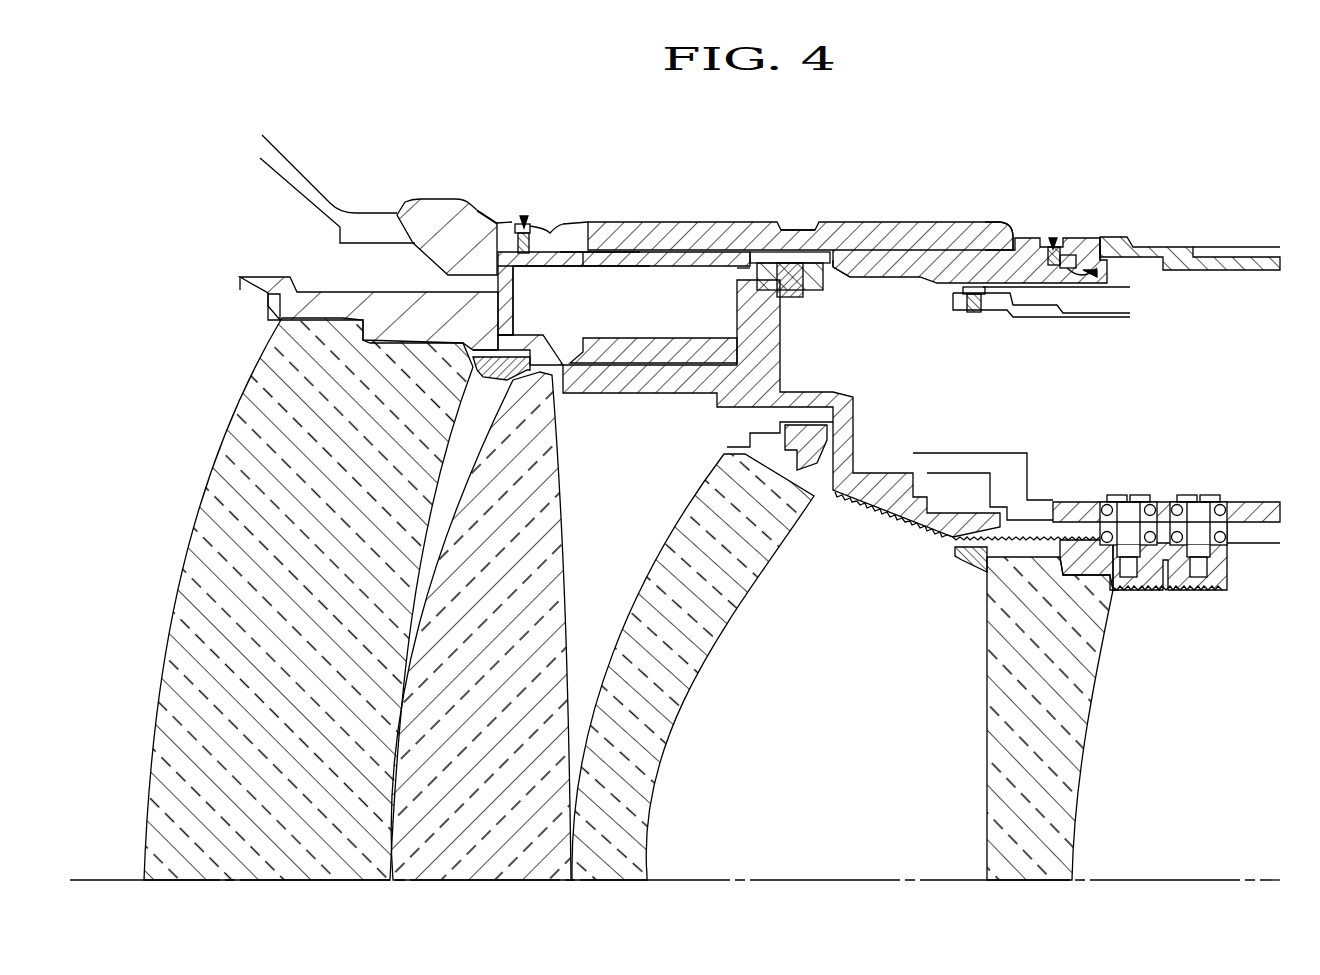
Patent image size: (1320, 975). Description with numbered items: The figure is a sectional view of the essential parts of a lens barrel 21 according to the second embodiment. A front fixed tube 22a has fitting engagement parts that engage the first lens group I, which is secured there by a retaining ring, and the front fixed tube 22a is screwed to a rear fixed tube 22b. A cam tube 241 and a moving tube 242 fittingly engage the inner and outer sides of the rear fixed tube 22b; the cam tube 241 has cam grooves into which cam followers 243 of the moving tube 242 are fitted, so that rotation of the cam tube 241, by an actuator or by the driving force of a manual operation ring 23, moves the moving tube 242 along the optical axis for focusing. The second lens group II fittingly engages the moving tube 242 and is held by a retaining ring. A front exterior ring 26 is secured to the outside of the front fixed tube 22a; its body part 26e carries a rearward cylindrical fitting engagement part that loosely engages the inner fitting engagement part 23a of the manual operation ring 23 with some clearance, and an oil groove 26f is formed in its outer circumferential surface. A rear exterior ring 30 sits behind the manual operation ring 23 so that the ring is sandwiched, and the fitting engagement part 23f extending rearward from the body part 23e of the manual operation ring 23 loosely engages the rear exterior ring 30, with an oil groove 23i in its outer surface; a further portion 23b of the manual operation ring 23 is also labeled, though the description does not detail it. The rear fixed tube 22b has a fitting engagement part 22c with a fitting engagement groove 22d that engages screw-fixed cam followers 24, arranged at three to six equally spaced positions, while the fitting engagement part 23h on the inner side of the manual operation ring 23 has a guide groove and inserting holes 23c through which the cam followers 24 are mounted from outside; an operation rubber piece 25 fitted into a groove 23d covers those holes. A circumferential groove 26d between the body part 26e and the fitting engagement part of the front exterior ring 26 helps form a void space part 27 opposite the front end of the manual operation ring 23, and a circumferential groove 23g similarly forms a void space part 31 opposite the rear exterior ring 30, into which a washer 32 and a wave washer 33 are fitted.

The lens barrel 21 is at (325, 150).
The front fixed tube 22a is at (387, 308).
The rear fixed tube 22b is at (848, 410).
The fitting engagement part 22c is at (837, 266).
The fitting engagement groove 22d is at (763, 252).
The manual operation ring 23 is at (537, 243).
The inner fitting engagement part 23a is at (570, 236).
The surface portion 23b is at (747, 268).
The inserting holes 23c is at (797, 222).
The groove 23d is at (567, 240).
The body part 23e is at (1005, 292).
The fitting engagement part 23f is at (1098, 250).
The circumferential groove 23g is at (1061, 282).
The fitting engagement part 23h is at (841, 272).
The oil groove 23i is at (1090, 274).
The cam followers 24 is at (815, 257).
The operation rubber piece 25 is at (1007, 243).
The front exterior ring 26 is at (443, 233).
The circumferential groove 26d is at (529, 300).
The body part 26e is at (496, 243).
The oil groove 26f is at (581, 302).
The void space part 27 is at (512, 220).
The rear exterior ring 30 is at (1118, 247).
The void space part 31 is at (1053, 236).
The washer 32 is at (1067, 262).
The wave washer 33 is at (1045, 275).
The cam tube 241 is at (1275, 515).
The moving tube 242 is at (1155, 582).
The cam followers 243 is at (1133, 512).
The first lens group I is at (234, 440).
The second lens group II is at (987, 695).